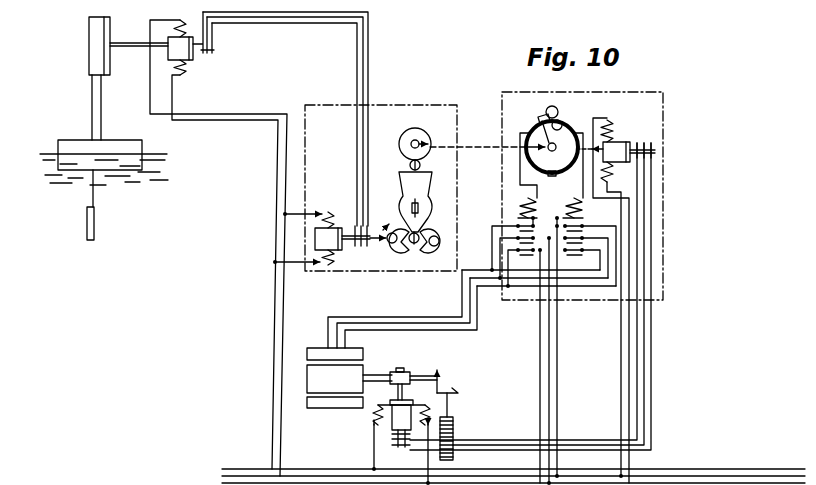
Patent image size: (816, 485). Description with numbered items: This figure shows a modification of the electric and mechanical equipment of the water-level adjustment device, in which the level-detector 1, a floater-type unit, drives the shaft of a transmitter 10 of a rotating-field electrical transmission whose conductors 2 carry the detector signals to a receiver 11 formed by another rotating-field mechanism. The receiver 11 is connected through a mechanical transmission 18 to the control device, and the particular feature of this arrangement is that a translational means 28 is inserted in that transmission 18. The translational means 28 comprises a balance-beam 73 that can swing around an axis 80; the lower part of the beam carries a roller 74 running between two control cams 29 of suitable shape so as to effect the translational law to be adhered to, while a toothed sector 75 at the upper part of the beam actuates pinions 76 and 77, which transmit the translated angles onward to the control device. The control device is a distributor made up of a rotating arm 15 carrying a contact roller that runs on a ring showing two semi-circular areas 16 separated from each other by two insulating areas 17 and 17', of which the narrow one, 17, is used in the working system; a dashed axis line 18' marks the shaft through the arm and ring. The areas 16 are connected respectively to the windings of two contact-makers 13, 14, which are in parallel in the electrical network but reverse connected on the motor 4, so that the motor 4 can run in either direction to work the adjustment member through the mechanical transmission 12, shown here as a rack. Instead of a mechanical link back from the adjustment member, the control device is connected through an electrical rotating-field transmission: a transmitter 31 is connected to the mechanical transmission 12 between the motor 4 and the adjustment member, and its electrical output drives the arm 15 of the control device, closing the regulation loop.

The level-detector 1 is at (95, 52).
The electric transmission 2 is at (233, 26).
The motor 4 is at (313, 380).
The transmitter 10 is at (175, 52).
The receiver 11 is at (329, 253).
The mechanical transmission 12 is at (450, 418).
The contact-maker 13 is at (522, 208).
The contact-maker 14 is at (582, 217).
The rotating arm 15 is at (557, 107).
The semi-circular areas 16 is at (575, 127).
The insulating area 17 is at (570, 124).
The insulating area 17' is at (555, 185).
The mechanical transmission 18 is at (373, 259).
The axis line 18' is at (487, 138).
The translational means 28 is at (398, 108).
The control cams 29 is at (402, 251).
The transmitter 31 is at (397, 425).
The balance-beam 73 is at (421, 193).
The roller 74 is at (413, 252).
The toothed sector 75 is at (405, 172).
The pinion 76 is at (422, 166).
The pinion 77 is at (428, 134).
The axis 80 is at (421, 209).